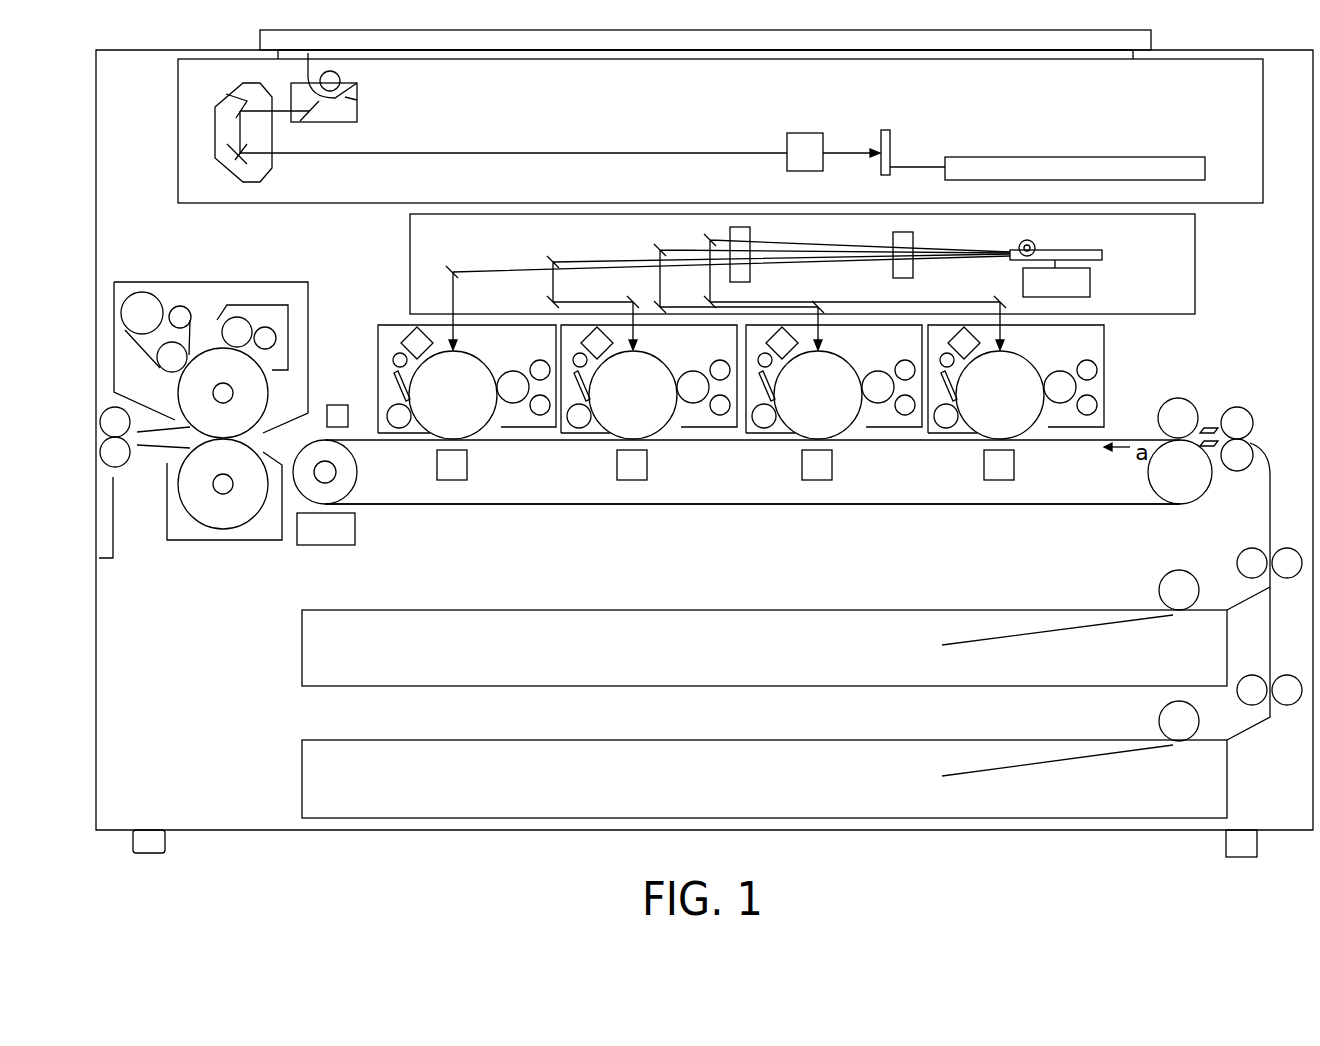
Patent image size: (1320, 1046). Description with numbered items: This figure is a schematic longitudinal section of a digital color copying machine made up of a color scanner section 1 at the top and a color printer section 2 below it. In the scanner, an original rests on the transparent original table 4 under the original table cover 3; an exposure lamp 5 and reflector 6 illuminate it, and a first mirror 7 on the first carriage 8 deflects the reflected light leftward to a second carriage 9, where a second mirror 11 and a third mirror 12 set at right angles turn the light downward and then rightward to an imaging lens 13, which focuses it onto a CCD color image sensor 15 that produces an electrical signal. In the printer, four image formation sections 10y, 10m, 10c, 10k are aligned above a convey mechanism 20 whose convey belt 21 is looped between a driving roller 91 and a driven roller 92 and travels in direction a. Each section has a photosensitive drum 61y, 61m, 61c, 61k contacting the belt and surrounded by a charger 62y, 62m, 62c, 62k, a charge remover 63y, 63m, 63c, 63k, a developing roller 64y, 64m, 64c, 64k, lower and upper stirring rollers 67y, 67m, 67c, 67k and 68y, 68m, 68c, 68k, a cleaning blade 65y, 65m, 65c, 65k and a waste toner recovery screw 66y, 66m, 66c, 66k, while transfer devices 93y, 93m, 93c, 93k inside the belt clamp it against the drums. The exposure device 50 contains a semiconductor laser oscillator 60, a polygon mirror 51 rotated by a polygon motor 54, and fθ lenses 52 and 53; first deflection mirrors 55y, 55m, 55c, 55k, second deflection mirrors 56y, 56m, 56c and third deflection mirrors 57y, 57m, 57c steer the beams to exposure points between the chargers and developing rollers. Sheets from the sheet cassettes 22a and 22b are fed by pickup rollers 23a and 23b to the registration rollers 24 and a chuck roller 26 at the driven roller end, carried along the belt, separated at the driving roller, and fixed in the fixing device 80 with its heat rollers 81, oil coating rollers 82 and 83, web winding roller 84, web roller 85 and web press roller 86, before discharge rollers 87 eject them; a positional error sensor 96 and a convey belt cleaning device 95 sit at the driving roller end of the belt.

The color scanner section 1 is at (660, 105).
The color printer section 2 is at (365, 268).
The original table cover 3 is at (619, 42).
The original table 4 is at (553, 50).
The exposure lamp 5 is at (340, 72).
The reflector 6 is at (345, 97).
The first mirror 7 is at (306, 120).
The first carriage 8 is at (357, 100).
The second carriage 9 is at (272, 168).
The second mirror 11 is at (225, 95).
The third mirror 12 is at (228, 160).
The imaging lens 13 is at (800, 132).
The CCD color image sensor 15 is at (886, 129).
The convey mechanism 20 is at (1070, 505).
The convey belt 21 is at (1140, 438).
The sheet cassette 22a is at (302, 648).
The sheet cassette 22b is at (302, 775).
The pickup roller 23a is at (1160, 580).
The pickup roller 23b is at (1160, 718).
The registration rollers 24 is at (1237, 406).
The chuck roller 26 is at (1180, 398).
The exposure device 50 is at (1198, 262).
The polygon mirror 51 is at (1103, 255).
The fθ lens 52 is at (913, 240).
The fθ lens 53 is at (752, 240).
The polygon motor 54 is at (1091, 283).
The first deflection mirror 55k is at (455, 268).
The first deflection mirror 55c is at (553, 260).
The first deflection mirror 55m is at (660, 250).
The first deflection mirror 55y is at (708, 238).
The second deflection mirror 56c is at (552, 302).
The second deflection mirror 56m is at (660, 306).
The second deflection mirror 56y is at (710, 300).
The third deflection mirror 57c is at (634, 301).
The third deflection mirror 57m is at (818, 304).
The third deflection mirror 57y is at (1000, 301).
The semiconductor laser oscillator 60 is at (1034, 246).
The fourth image formation section 10k is at (486, 440).
The third image formation section 10c is at (666, 440).
The second image formation section 10m is at (851, 440).
The first image formation section 10y is at (1033, 440).
The photosensitive drum 61k is at (482, 358).
The photosensitive drum 61c is at (663, 358).
The photosensitive drum 61m is at (848, 358).
The photosensitive drum 61y is at (1030, 358).
The charger 62k is at (410, 332).
The charger 62c is at (597, 328).
The charger 62m is at (792, 330).
The charger 62y is at (964, 328).
The charge remover 63k is at (393, 357).
The charge remover 63c is at (577, 353).
The charge remover 63m is at (766, 352).
The charge remover 63y is at (946, 352).
The developing roller 64k is at (511, 404).
The developing roller 64c is at (691, 404).
The developing roller 64m is at (876, 404).
The developing roller 64y is at (1058, 404).
The cleaning blade 65k is at (396, 386).
The cleaning blade 65c is at (579, 388).
The cleaning blade 65m is at (764, 388).
The cleaning blade 65y is at (946, 388).
The waste toner recovery screw 66k is at (388, 410).
The waste toner recovery screw 66c is at (581, 428).
The waste toner recovery screw 66m is at (766, 428).
The waste toner recovery screw 66y is at (948, 428).
The lower stirring roller 67k is at (539, 416).
The lower stirring roller 67c is at (717, 416).
The lower stirring roller 67m is at (902, 416).
The lower stirring roller 67y is at (1087, 416).
The upper stirring roller 68k is at (538, 360).
The upper stirring roller 68c is at (720, 360).
The upper stirring roller 68m is at (905, 360).
The upper stirring roller 68y is at (1085, 360).
The transfer device 93k is at (446, 480).
The transfer device 93c is at (626, 480).
The transfer device 93m is at (811, 480).
The transfer device 93y is at (993, 480).
The fixing device 80 is at (320, 305).
The heat rollers 81 is at (222, 530).
The oil coating roller 82 is at (268, 326).
The oil coating roller 83 is at (238, 316).
The web winding roller 84 is at (182, 306).
The web roller 85 is at (138, 292).
The web press roller 86 is at (160, 368).
The discharge rollers 87 is at (122, 468).
The driving roller 91 is at (355, 492).
The driven roller 92 is at (1152, 500).
The convey belt cleaning device 95 is at (326, 546).
The positional error sensor 96 is at (349, 428).